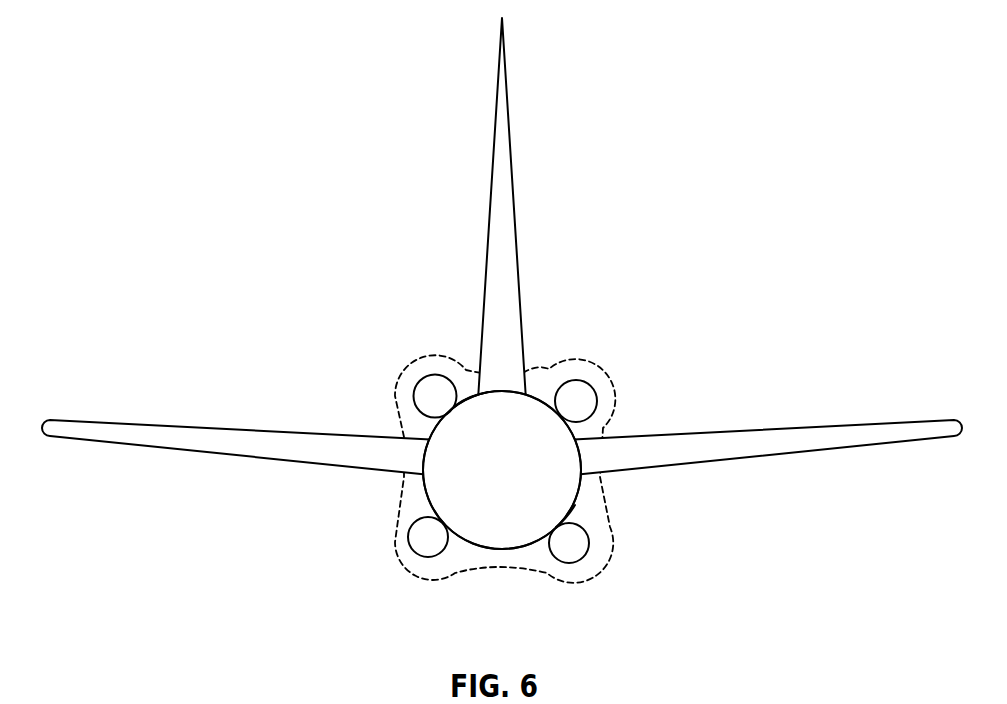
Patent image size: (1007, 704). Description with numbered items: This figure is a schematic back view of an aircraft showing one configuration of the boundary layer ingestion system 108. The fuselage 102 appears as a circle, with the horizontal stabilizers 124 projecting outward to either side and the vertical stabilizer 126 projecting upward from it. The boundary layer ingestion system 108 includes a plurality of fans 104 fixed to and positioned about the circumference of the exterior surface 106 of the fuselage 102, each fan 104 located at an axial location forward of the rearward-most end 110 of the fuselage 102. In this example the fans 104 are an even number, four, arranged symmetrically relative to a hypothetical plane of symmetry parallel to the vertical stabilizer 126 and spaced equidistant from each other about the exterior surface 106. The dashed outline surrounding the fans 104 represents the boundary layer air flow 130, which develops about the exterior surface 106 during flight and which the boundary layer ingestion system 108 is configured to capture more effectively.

The fuselage 102 is at (577, 432).
The fans 104 is at (440, 397).
The exterior surface 106 is at (470, 393).
The boundary layer ingestion system 108 is at (585, 522).
The rearward-most end 110 is at (500, 520).
The horizontal stabilizers 124 is at (184, 433).
The vertical stabilizer 126 is at (505, 212).
The boundary layer air flow 130 is at (447, 567).